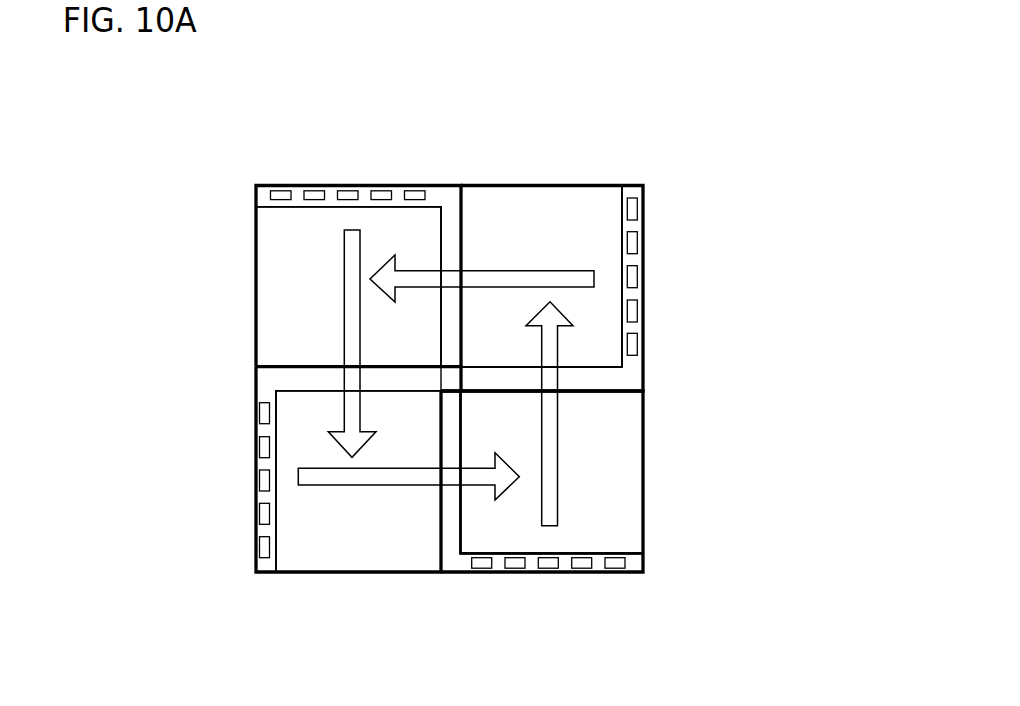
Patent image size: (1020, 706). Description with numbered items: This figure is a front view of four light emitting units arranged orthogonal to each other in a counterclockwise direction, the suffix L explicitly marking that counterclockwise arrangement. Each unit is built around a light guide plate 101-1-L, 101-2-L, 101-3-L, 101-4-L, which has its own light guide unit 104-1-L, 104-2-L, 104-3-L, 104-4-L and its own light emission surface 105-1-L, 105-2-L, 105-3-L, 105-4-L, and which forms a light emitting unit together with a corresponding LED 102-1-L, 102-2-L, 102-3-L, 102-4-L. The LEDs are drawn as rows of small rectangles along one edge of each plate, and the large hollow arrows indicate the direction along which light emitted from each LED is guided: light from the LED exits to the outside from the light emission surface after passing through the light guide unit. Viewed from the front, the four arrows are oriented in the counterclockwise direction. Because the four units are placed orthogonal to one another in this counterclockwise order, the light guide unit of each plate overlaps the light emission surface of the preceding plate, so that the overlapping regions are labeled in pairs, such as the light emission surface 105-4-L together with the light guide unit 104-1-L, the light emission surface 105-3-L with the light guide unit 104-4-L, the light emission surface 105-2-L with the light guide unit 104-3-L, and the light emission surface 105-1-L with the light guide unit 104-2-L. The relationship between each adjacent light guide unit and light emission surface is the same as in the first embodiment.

The light guide plate 101-1-L is at (441, 207).
The light guide plate 101-2-L is at (300, 388).
The light guide plate 101-3-L is at (459, 533).
The light guide plate 101-4-L is at (600, 367).
The LED 102-1-L is at (313, 186).
The LED 102-2-L is at (257, 477).
The LED 102-3-L is at (582, 567).
The LED 102-4-L is at (638, 279).
The light guide unit 104-1-L is at (294, 287).
The light guide unit 104-2-L is at (354, 529).
The light guide unit 104-3-L is at (675, 472).
The light guide unit 104-4-L is at (597, 248).
The light emission surface 105-1-L is at (328, 547).
The light emission surface 105-2-L is at (600, 458).
The light emission surface 105-3-L is at (563, 207).
The light emission surface 105-4-L is at (283, 273).